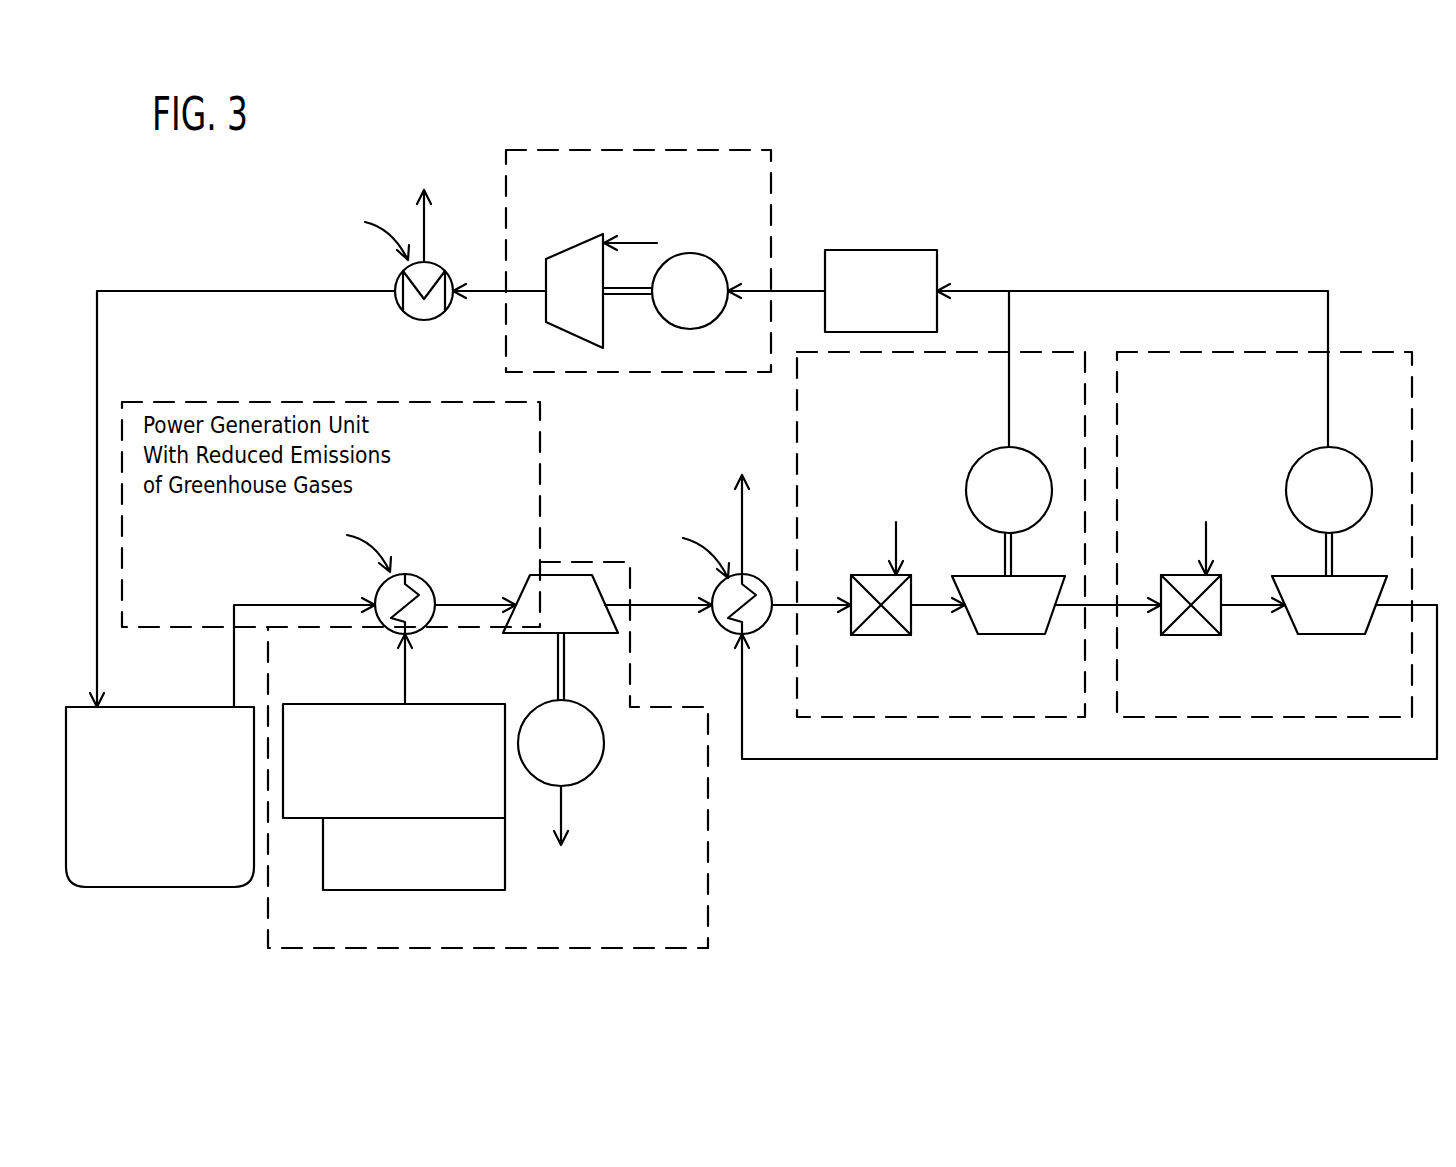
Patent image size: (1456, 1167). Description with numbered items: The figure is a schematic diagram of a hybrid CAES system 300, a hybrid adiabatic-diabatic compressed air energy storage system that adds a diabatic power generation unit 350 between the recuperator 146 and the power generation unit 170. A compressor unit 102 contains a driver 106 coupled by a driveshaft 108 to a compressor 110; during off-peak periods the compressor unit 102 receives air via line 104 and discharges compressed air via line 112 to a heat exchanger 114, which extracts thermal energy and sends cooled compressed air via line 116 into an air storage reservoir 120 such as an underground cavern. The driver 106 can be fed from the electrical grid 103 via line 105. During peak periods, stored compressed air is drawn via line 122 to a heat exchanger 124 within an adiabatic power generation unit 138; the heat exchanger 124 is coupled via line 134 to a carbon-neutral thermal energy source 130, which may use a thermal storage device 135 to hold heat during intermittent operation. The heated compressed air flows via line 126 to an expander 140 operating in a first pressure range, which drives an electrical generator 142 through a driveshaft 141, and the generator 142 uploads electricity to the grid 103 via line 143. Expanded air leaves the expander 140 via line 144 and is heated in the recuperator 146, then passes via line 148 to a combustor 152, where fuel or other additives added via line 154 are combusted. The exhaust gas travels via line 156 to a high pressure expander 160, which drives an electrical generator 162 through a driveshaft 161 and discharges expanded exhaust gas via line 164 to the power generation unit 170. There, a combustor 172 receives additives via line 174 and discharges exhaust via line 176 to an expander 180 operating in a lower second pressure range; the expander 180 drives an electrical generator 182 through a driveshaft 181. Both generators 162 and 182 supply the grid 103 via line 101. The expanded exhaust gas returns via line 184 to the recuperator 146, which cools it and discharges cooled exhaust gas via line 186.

The hybrid CAES system 300 is at (1232, 155).
The line 101 is at (1142, 291).
The compressor unit 102 is at (657, 150).
The electrical grid 103 is at (880, 250).
The line 104 is at (632, 243).
The line 105 is at (798, 291).
The driver 106 is at (690, 253).
The driveshaft 108 is at (628, 296).
The compressor 110 is at (590, 304).
The line 112 is at (529, 289).
The heat exchanger 114 is at (404, 273).
The line 116 is at (222, 291).
The air storage reservoir 120 is at (160, 887).
The line 122 is at (234, 672).
The heat exchanger 124 is at (373, 590).
The line 126 is at (480, 600).
The carbon-neutral thermal energy source 130 is at (305, 820).
The line 134 is at (403, 675).
The thermal storage device 135 is at (415, 890).
The adiabatic power generation unit 138 is at (708, 850).
The expander 140 is at (543, 618).
The driveshaft 141 is at (555, 675).
The electrical generator 142 is at (605, 745).
The line 143 is at (563, 808).
The line 144 is at (667, 607).
The recuperator 146 is at (718, 590).
The line 148 is at (782, 607).
The combustor 152 is at (893, 635).
The line 154 is at (893, 540).
The line 156 is at (935, 607).
The expander 160 is at (990, 618).
The driveshaft 161 is at (1005, 555).
The electrical generator 162 is at (985, 455).
The line 164 is at (1100, 607).
The power generation unit 170 is at (1365, 352).
The combustor 172 is at (1190, 635).
The line 174 is at (1203, 540).
The line 176 is at (1250, 607).
The expander 180 is at (1311, 618).
The driveshaft 181 is at (1326, 555).
The electrical generator 182 is at (1305, 455).
The line 184 is at (1088, 759).
The line 186 is at (742, 510).
The diabatic power generation unit 350 is at (1058, 352).